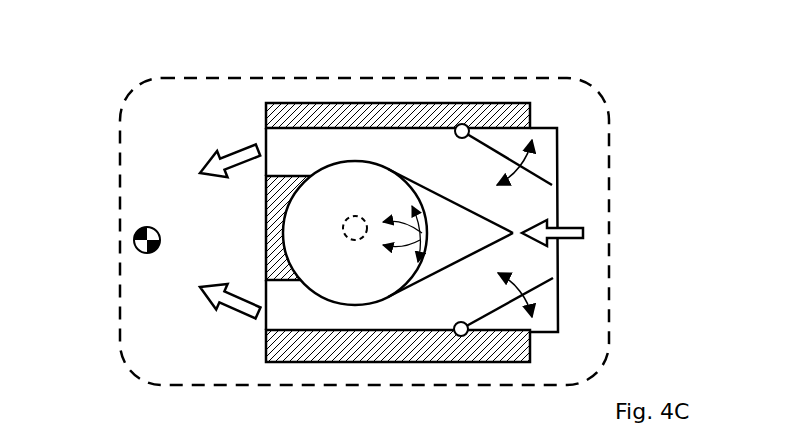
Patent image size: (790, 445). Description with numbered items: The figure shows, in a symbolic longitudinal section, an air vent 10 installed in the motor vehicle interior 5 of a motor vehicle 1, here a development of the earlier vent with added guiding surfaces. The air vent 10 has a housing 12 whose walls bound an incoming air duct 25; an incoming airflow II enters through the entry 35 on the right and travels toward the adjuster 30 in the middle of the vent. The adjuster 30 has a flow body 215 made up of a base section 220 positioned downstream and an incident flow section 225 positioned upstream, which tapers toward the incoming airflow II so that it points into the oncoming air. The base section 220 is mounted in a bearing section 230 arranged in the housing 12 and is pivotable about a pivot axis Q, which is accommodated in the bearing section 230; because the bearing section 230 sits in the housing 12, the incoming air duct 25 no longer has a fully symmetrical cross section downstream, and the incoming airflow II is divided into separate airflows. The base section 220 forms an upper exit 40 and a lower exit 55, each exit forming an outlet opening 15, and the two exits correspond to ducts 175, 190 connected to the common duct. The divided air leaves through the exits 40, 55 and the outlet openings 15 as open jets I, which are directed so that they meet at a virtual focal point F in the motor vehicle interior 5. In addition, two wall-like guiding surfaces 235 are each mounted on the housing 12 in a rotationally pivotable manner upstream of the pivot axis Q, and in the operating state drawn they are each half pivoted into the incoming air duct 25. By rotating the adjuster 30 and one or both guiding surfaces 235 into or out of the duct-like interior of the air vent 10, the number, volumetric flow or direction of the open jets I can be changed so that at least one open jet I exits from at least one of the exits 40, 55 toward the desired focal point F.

The motor vehicle 1 is at (605, 365).
The motor vehicle interior 5 is at (167, 362).
The air vent 10 is at (412, 193).
The housing 12 is at (457, 115).
The outlet opening 15 is at (214, 230).
The upper exit 40 is at (263, 137).
The lower exit 55 is at (263, 325).
The duct 175 is at (288, 155).
The duct 190 is at (297, 310).
The bearing section 230 is at (270, 211).
The adjuster 30 is at (398, 230).
The base section 220 is at (350, 267).
The flow body 215 is at (397, 275).
The incident flow section 225 is at (428, 245).
The pivot axis Q is at (354, 216).
The incoming air duct 25 is at (540, 195).
The entry 35 is at (537, 262).
The guiding surfaces 235 is at (552, 150).
The open jet I is at (207, 163).
The incoming airflow II is at (583, 231).
The focal point F is at (134, 240).